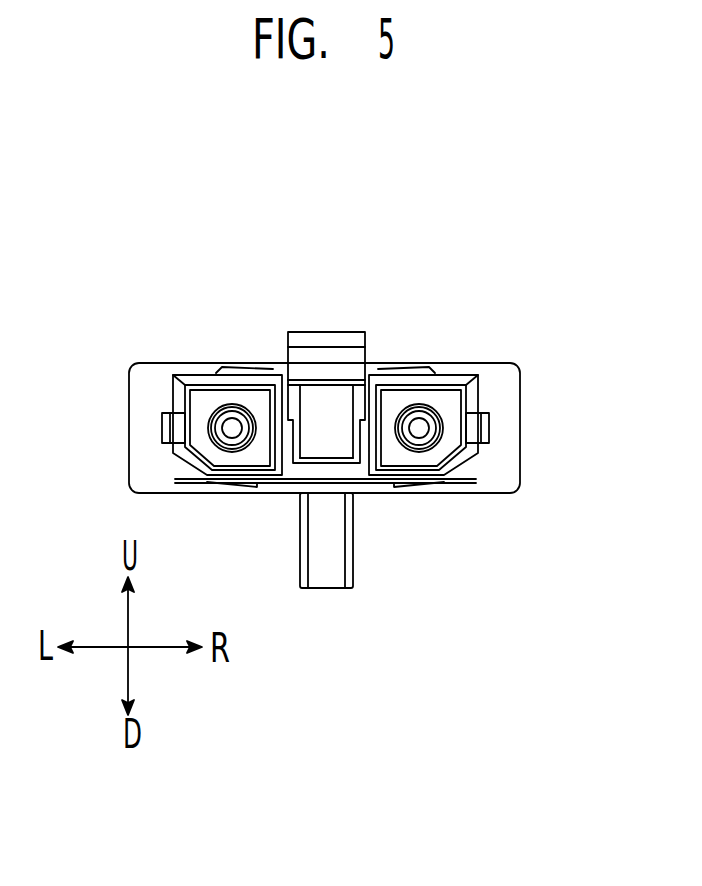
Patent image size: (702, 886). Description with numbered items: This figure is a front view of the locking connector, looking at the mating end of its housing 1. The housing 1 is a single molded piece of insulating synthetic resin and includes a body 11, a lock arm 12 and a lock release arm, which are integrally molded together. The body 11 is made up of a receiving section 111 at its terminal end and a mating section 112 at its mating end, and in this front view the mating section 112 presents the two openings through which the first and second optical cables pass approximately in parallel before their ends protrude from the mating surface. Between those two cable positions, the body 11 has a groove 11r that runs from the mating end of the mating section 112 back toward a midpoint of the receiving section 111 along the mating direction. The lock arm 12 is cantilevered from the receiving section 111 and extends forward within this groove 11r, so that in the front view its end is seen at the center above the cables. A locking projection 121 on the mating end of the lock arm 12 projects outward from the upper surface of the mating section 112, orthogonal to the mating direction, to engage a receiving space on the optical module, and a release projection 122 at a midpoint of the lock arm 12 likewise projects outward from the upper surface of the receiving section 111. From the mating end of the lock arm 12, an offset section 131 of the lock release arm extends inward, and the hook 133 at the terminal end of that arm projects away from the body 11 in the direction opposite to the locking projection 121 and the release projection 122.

The housing 1 is at (328, 243).
The body 11 is at (577, 573).
The receiving section 111 is at (519, 462).
The mating section 112 is at (461, 470).
The groove 11r is at (360, 437).
The lock arm 12 is at (323, 326).
The locking projection 121 is at (308, 343).
The release projection 122 is at (348, 333).
The offset section 131 is at (318, 445).
The hook 133 is at (353, 523).